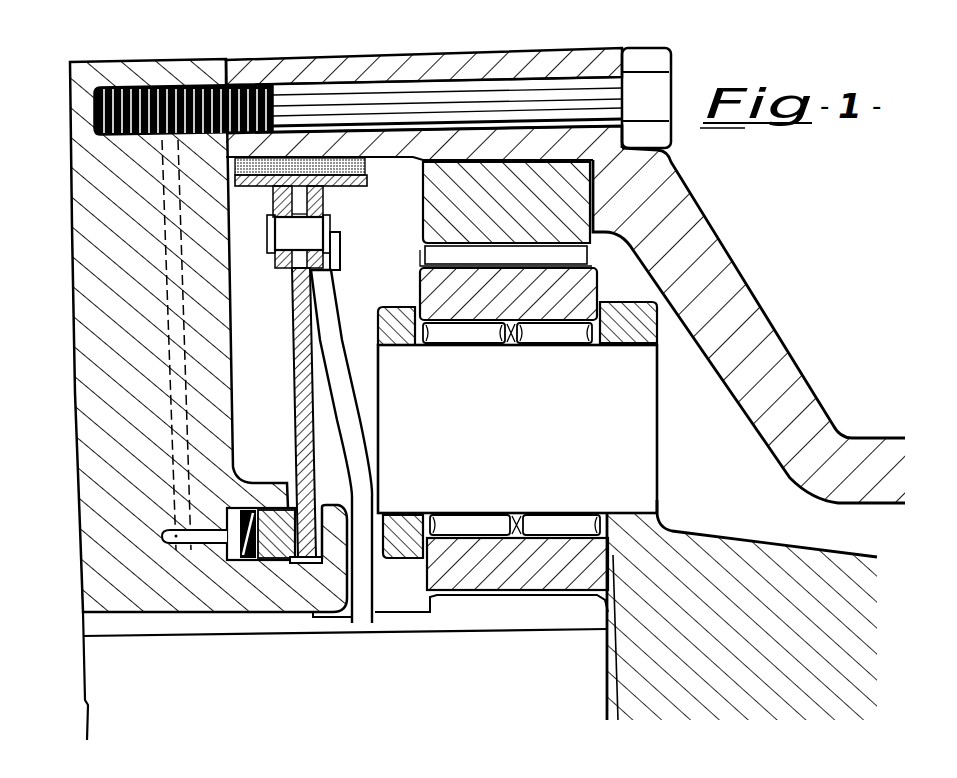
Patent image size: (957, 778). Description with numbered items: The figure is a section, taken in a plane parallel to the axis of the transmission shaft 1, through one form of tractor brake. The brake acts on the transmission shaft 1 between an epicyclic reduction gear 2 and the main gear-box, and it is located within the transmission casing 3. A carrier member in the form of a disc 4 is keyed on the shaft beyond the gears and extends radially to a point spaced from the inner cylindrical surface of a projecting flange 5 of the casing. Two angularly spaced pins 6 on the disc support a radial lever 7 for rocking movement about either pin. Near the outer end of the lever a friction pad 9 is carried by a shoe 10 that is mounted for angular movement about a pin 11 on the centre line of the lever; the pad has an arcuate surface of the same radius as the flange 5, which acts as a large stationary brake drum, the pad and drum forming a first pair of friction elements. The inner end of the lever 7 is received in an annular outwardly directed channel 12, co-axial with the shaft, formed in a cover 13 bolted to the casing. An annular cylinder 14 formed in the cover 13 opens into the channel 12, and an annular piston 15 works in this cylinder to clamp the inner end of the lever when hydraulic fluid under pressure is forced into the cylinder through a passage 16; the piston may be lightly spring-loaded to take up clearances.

The transmission shaft 1 is at (123, 647).
The epicyclic reduction gear 2 is at (637, 380).
The transmission casing 3 is at (670, 227).
The disc 4 is at (333, 342).
The projecting flange 5 is at (367, 140).
The pins 6 is at (340, 253).
The radial lever 7 is at (302, 332).
The friction pad 9 is at (263, 183).
The shoe 10 is at (360, 183).
The pin 11 is at (292, 227).
The annular channel 12 is at (293, 553).
The cover 13 is at (125, 557).
The annular cylinder 14 is at (233, 548).
The annular piston 15 is at (283, 540).
The passage 16 is at (175, 535).